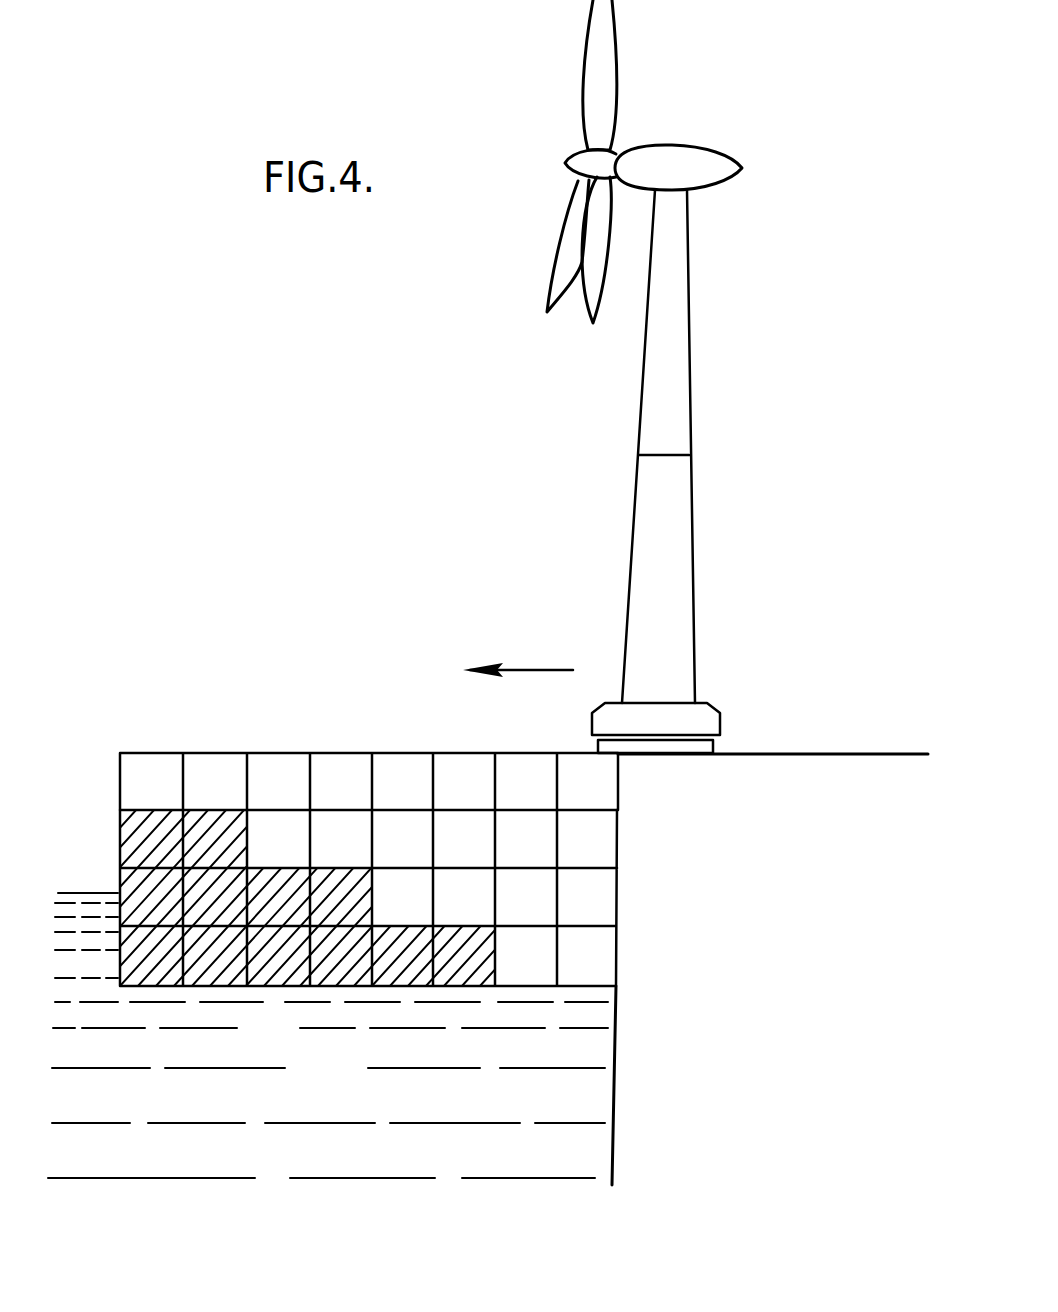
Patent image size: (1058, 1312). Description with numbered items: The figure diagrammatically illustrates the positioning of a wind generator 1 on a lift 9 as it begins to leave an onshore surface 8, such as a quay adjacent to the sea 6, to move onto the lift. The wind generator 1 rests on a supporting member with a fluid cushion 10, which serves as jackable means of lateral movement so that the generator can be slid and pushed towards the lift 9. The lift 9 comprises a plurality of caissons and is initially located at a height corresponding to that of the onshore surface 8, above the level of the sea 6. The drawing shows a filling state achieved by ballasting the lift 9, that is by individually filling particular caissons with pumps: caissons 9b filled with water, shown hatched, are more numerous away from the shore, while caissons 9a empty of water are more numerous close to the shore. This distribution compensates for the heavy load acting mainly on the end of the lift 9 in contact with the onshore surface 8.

The wind generator 1 is at (712, 348).
The sea 6 is at (362, 1095).
The onshore surface 8 is at (858, 770).
The lift 9 is at (329, 934).
The caissons empty of water 9a is at (343, 767).
The caissons filled with water 9b is at (282, 947).
The fluid cushion 10 is at (715, 752).